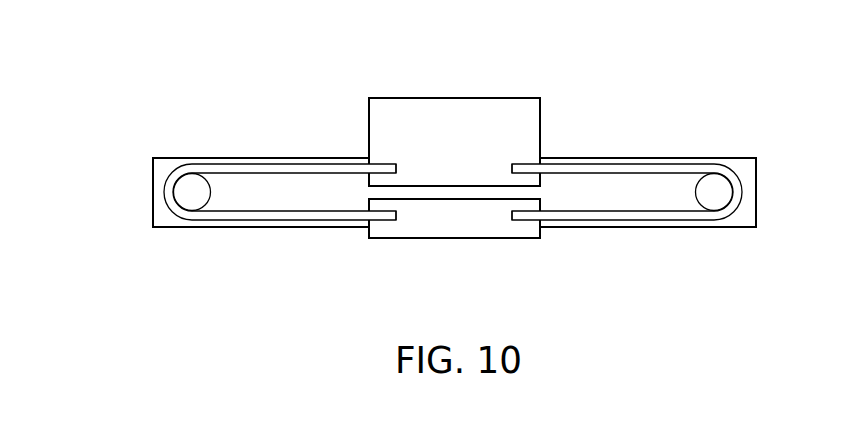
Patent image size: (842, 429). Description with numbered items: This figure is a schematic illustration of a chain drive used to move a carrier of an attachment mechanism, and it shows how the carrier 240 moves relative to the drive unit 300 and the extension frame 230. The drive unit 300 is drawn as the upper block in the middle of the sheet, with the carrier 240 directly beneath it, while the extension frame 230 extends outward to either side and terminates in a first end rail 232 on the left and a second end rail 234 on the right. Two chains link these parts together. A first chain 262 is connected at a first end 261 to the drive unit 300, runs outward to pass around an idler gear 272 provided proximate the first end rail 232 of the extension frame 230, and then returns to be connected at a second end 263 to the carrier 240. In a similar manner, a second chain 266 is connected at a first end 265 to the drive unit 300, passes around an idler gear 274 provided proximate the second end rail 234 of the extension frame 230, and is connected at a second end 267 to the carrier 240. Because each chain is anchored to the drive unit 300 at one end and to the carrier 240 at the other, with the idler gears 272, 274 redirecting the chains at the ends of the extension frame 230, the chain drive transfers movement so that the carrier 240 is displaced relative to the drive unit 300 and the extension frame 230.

The drive unit 300 is at (481, 97).
The carrier 240 is at (455, 238).
The extension frame 230 is at (700, 159).
The first end rail 232 is at (153, 192).
The second end rail 234 is at (756, 190).
The first chain 262 is at (270, 163).
The second chain 266 is at (643, 173).
The first end 261 is at (398, 170).
The second end 263 is at (396, 222).
The first end 265 is at (512, 168).
The second end 267 is at (513, 222).
The idler gear 272 is at (188, 200).
The idler gear 274 is at (717, 200).